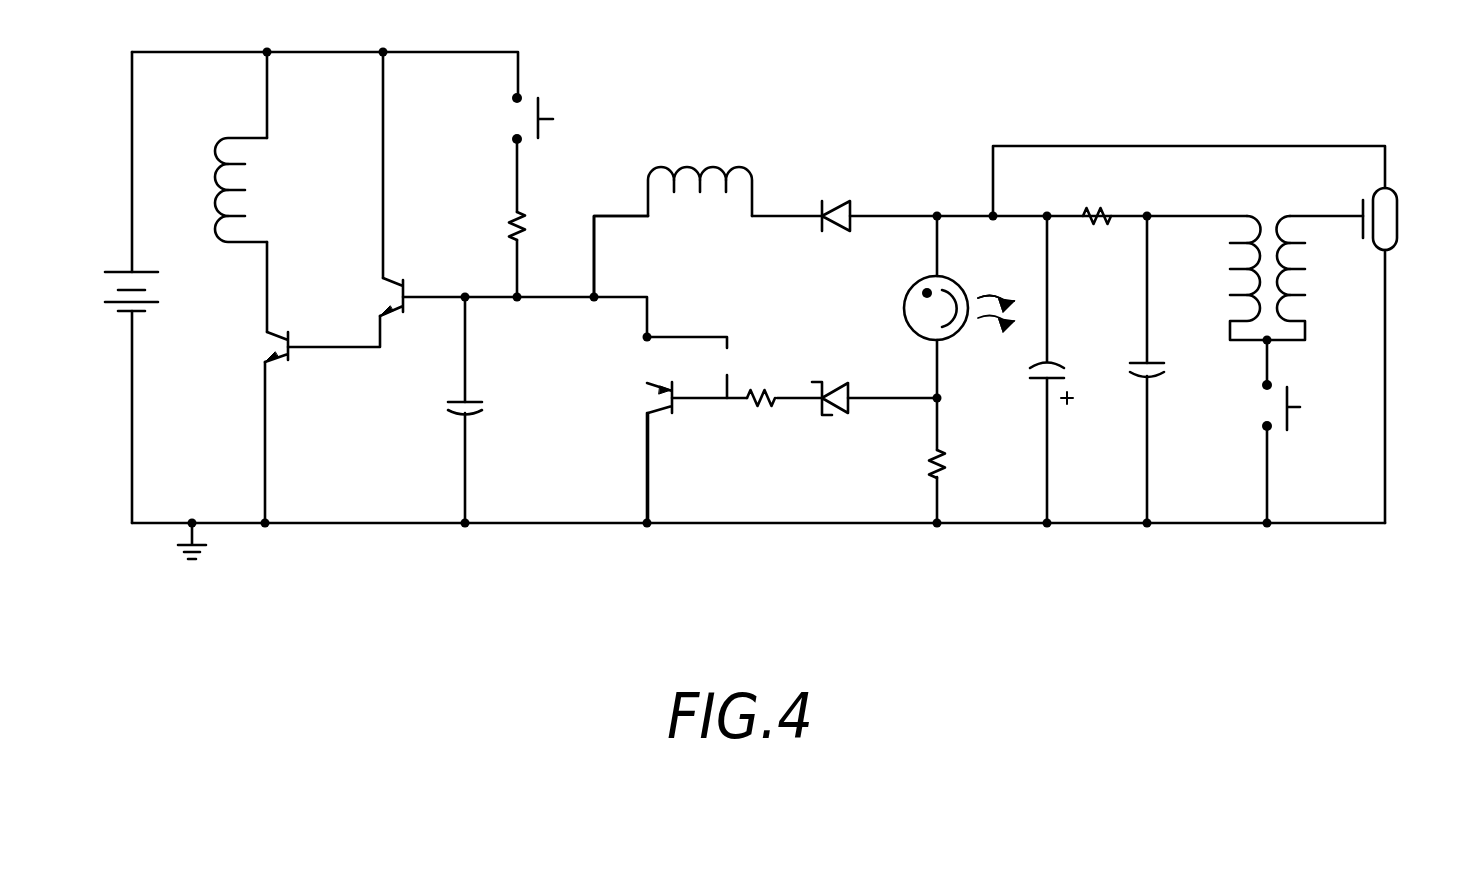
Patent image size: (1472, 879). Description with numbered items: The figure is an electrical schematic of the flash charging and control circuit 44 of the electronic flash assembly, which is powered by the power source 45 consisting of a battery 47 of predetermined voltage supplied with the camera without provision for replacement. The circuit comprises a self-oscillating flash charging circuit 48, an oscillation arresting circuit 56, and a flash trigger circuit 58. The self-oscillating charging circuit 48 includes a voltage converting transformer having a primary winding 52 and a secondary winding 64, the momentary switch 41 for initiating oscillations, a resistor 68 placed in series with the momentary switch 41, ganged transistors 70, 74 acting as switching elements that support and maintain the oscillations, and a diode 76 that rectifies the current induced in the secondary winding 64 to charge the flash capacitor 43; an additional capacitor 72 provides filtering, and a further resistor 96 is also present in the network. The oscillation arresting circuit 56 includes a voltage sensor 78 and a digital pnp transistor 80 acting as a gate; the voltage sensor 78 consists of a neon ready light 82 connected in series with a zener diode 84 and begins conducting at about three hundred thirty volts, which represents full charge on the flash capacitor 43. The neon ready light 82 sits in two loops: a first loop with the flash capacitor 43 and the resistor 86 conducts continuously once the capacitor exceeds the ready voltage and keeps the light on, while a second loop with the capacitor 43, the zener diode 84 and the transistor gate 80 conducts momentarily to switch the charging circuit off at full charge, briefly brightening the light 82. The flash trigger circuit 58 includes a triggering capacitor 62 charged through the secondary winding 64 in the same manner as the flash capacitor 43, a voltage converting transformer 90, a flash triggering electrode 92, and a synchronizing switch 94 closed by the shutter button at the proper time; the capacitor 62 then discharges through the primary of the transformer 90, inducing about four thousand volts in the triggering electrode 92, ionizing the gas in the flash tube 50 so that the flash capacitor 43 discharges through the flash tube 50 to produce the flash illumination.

The momentary switch 41 is at (547, 108).
The flash capacitor 43 is at (1037, 380).
The charging and control circuit 44 is at (1101, 558).
The power source 45 is at (152, 331).
The battery 47 is at (155, 303).
The self-oscillating flash charging circuit 48 is at (759, 132).
The flash tube 50 is at (1400, 195).
The primary transformer winding 52 is at (248, 137).
The oscillation arresting circuit 56 is at (627, 396).
The flash trigger circuit 58 is at (1308, 373).
The triggering capacitor 62 is at (1153, 380).
The secondary transformer winding 64 is at (662, 167).
The resistor 68 is at (510, 215).
The transistor 70 is at (402, 280).
The capacitor 72 is at (457, 400).
The transistor 74 is at (287, 332).
The diode 76 is at (843, 200).
The voltage sensor 78 is at (826, 438).
The digital pnp transistor 80 is at (678, 414).
The neon ready light 82 is at (906, 290).
The zener diode 84 is at (843, 388).
The resistor 86 is at (936, 452).
The voltage converting transformer 90 is at (1296, 342).
The flash triggering electrode 92 is at (1360, 210).
The synchronizing switch 94 is at (1292, 420).
The resistor 96 is at (1107, 213).